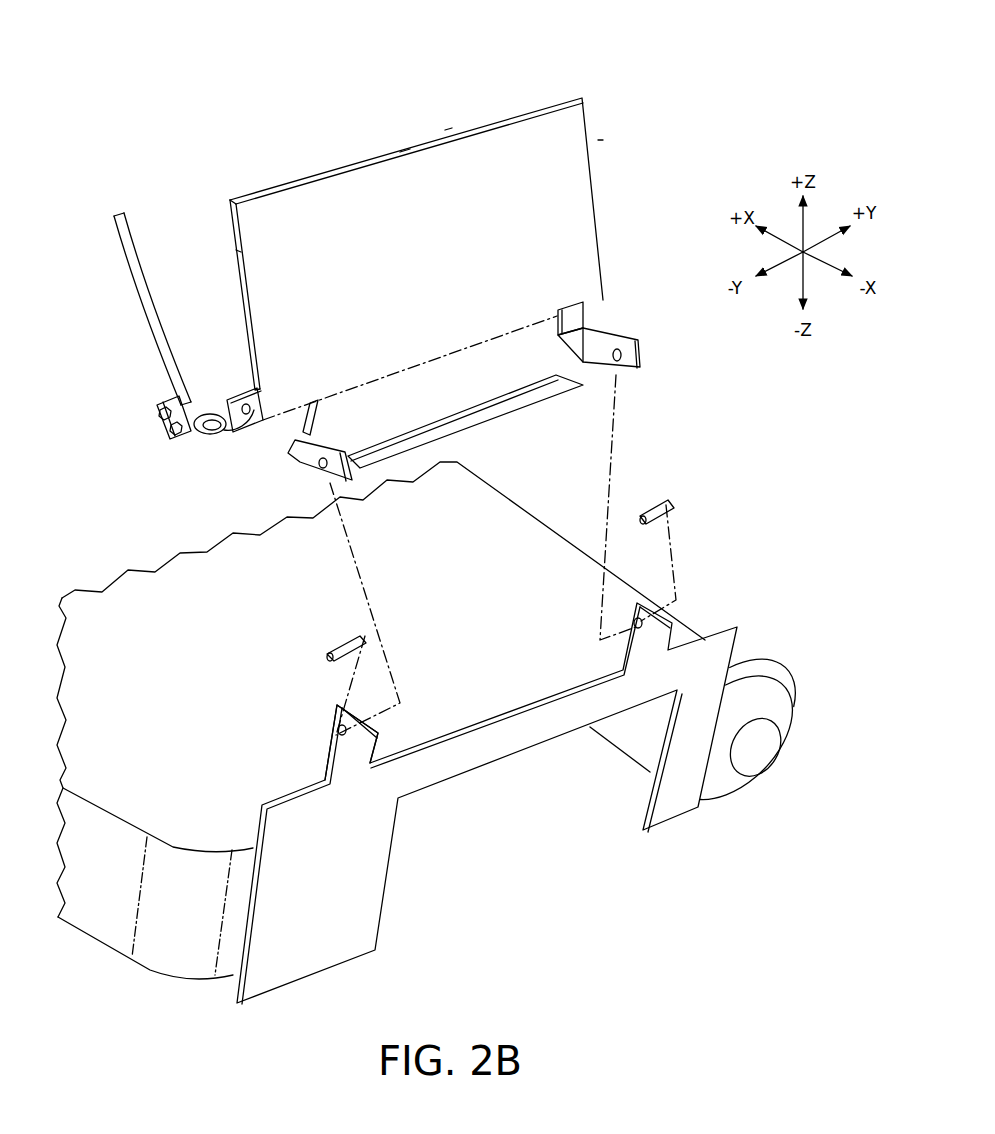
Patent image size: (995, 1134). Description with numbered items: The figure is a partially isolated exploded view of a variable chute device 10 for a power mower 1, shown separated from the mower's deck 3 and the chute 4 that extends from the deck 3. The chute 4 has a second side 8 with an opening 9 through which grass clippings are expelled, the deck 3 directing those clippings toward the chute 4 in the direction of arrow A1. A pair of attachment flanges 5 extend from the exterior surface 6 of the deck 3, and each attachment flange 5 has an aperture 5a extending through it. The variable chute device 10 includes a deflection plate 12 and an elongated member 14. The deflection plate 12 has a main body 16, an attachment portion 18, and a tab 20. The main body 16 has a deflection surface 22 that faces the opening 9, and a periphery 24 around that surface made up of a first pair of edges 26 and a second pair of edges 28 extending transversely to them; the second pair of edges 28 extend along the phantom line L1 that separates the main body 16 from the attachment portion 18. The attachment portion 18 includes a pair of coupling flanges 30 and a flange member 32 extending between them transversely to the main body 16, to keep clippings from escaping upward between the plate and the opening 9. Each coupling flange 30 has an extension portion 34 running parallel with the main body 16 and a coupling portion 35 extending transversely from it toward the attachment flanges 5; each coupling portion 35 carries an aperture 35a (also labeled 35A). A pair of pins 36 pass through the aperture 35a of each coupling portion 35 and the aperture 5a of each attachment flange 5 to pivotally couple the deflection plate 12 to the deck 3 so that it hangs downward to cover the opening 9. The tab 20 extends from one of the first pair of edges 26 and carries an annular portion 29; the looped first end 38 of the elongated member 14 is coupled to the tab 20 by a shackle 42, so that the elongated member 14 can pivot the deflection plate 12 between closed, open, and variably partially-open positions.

The power mower 1 is at (58, 452).
The deck 3 is at (369, 720).
The chute 4 is at (484, 821).
The attachment flanges 5 is at (458, 699).
The aperture 5a is at (336, 734).
The exterior surface 6 is at (198, 838).
The second side 8 is at (264, 986).
The opening 9 is at (407, 938).
The variable chute device 10 is at (326, 130).
The deflection plate 12 is at (511, 110).
The elongated member 14 is at (114, 242).
The main body 16 is at (405, 155).
The attachment portion 18 is at (465, 430).
The tab 20 is at (240, 387).
The deflection surface 22 is at (455, 306).
The periphery 24 is at (228, 205).
The first pair of edges 26 is at (232, 257).
The second pair of edges 28 is at (448, 130).
The annular portion 29 is at (209, 408).
The coupling flanges 30 is at (466, 430).
The flange member 32 is at (410, 443).
The extension portion 34 is at (316, 409).
The coupling portion 35 is at (290, 440).
The aperture 35A is at (322, 467).
The aperture 35a is at (626, 356).
The pins 36 is at (326, 652).
The first end 38 is at (182, 395).
The shackle 42 is at (158, 414).
The arrow A1 is at (504, 846).
The phantom line L1 is at (388, 376).